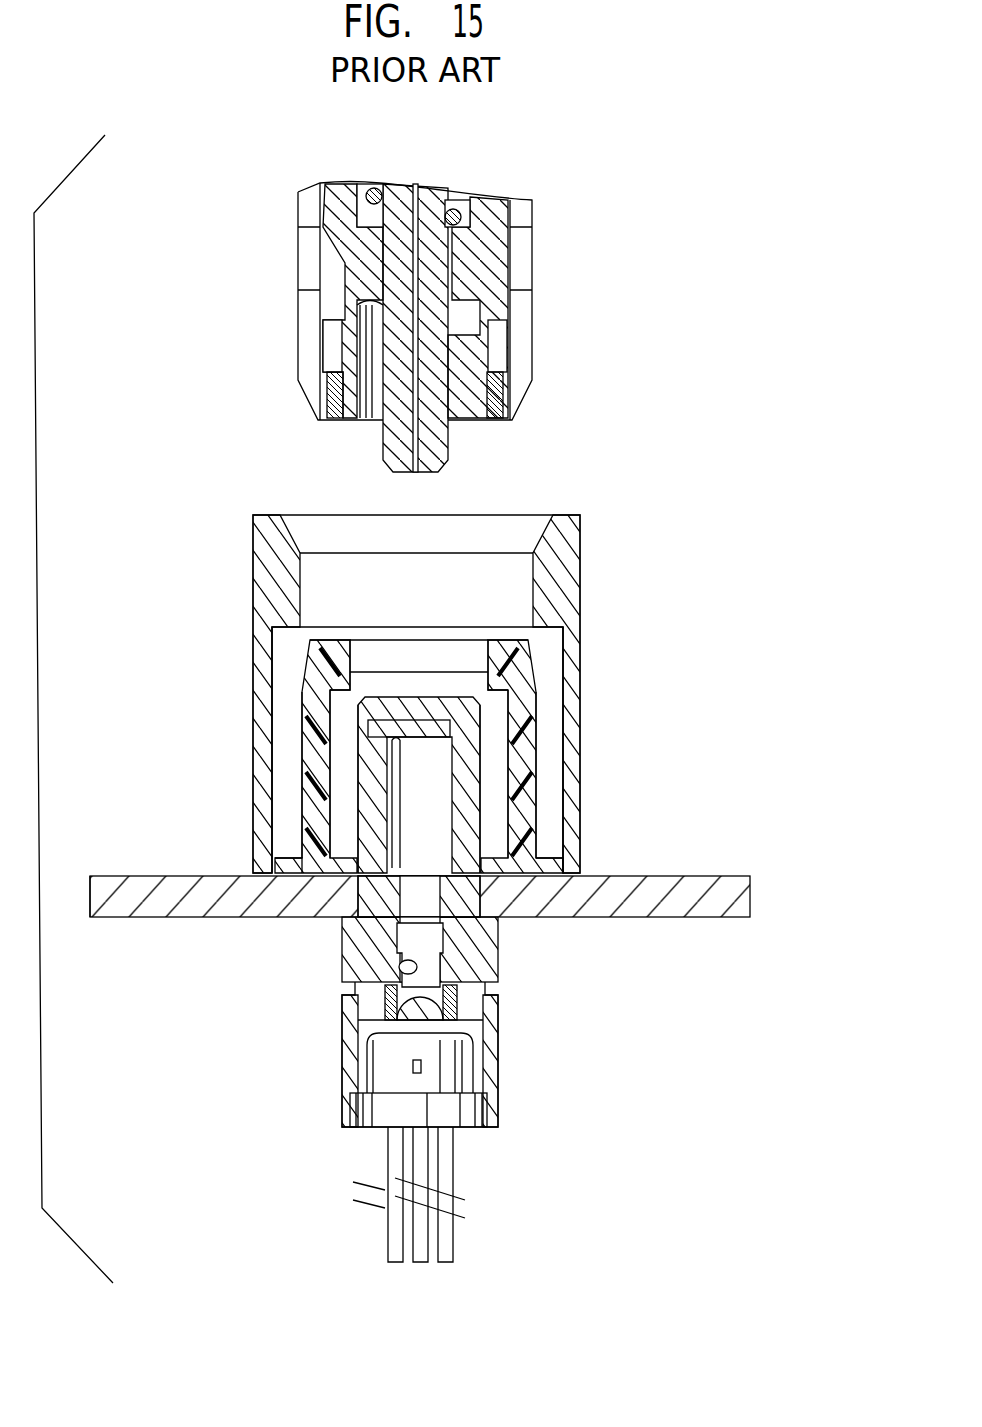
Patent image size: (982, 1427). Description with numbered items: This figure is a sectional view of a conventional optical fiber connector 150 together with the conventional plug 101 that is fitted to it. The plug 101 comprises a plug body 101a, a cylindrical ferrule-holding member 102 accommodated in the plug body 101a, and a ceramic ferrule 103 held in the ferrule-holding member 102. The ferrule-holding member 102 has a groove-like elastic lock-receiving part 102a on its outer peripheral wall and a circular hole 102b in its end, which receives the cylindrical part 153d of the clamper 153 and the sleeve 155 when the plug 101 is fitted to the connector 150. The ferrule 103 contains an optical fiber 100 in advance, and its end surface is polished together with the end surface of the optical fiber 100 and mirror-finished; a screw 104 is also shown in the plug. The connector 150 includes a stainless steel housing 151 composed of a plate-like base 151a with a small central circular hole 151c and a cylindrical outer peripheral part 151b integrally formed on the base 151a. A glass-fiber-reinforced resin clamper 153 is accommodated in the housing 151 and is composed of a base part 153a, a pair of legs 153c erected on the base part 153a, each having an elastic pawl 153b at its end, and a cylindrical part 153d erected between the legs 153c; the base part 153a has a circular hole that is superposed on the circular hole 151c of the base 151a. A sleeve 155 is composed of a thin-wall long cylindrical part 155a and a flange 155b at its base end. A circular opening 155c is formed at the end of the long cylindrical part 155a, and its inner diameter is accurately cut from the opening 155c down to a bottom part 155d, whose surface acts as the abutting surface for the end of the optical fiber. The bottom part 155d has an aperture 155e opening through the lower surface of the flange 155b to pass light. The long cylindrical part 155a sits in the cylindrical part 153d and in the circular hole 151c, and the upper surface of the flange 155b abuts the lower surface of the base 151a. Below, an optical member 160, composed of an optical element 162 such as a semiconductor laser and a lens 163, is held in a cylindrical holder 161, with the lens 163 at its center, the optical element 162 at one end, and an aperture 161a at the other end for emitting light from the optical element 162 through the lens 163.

The optical fiber 100 is at (405, 428).
The plug 101 is at (428, 316).
The plug body 101a is at (532, 216).
The ferrule-holding member 102 is at (330, 209).
The elastic lock-receiving part 102a is at (330, 284).
The circular hole 102b is at (365, 418).
The ferrule 103 is at (450, 448).
The screw 104 is at (372, 187).
The optical fiber connector 150 is at (434, 888).
The housing 151 is at (420, 747).
The base 151a is at (118, 900).
The outer peripheral part 151b is at (268, 729).
The circular hole 151c is at (498, 917).
The clamper 153 is at (334, 770).
The base part 153a is at (305, 864).
The elastic pawl 153b is at (318, 649).
The legs 153c is at (340, 756).
The cylindrical part 153d is at (372, 797).
The sleeve 155 is at (463, 805).
The long cylindrical part 155a is at (460, 744).
The flange 155b is at (488, 965).
The circular opening 155c is at (398, 795).
The bottom part 155d is at (405, 964).
The aperture 155e is at (455, 880).
The optical member 160 is at (394, 1111).
The holder 161 is at (346, 1043).
The aperture 161a is at (395, 999).
The optical element 162 is at (378, 1128).
The lens 163 is at (365, 1019).